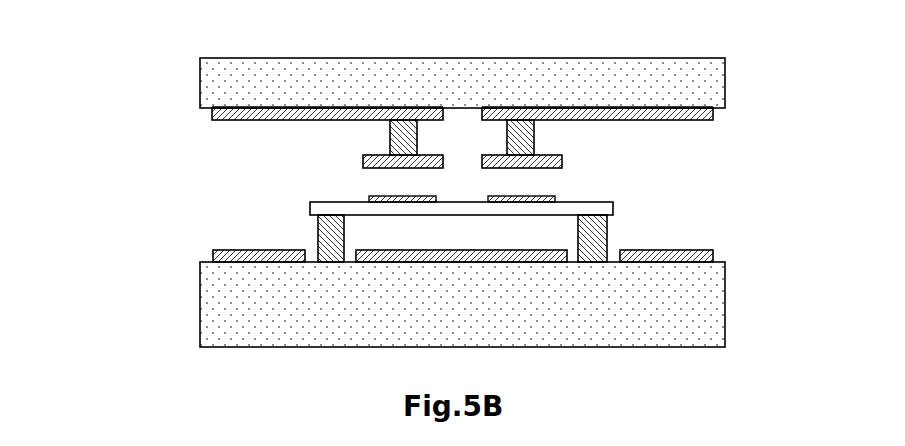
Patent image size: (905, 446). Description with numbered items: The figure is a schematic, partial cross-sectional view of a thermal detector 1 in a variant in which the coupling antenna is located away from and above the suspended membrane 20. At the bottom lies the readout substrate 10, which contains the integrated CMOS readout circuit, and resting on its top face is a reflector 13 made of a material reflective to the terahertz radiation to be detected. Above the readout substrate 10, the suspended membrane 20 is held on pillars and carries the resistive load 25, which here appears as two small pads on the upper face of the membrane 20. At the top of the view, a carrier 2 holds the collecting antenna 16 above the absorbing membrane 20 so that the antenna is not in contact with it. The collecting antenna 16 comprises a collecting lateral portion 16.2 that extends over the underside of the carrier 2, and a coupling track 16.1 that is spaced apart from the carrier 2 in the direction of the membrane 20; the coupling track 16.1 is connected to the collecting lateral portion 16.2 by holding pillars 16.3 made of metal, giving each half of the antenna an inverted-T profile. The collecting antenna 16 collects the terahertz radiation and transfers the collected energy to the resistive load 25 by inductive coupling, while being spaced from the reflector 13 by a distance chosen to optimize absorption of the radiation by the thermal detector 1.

The thermal detector 1 is at (110, 100).
The carrier 2 is at (728, 82).
The readout substrate 10 is at (729, 305).
The reflector 13 is at (716, 257).
The collecting antenna 16 is at (716, 112).
The coupling track 16.1 is at (361, 161).
The collecting lateral portion 16.2 is at (292, 105).
The holding pillars 16.3 is at (388, 137).
The suspended membrane 20 is at (286, 208).
The resistive load 25 is at (522, 204).